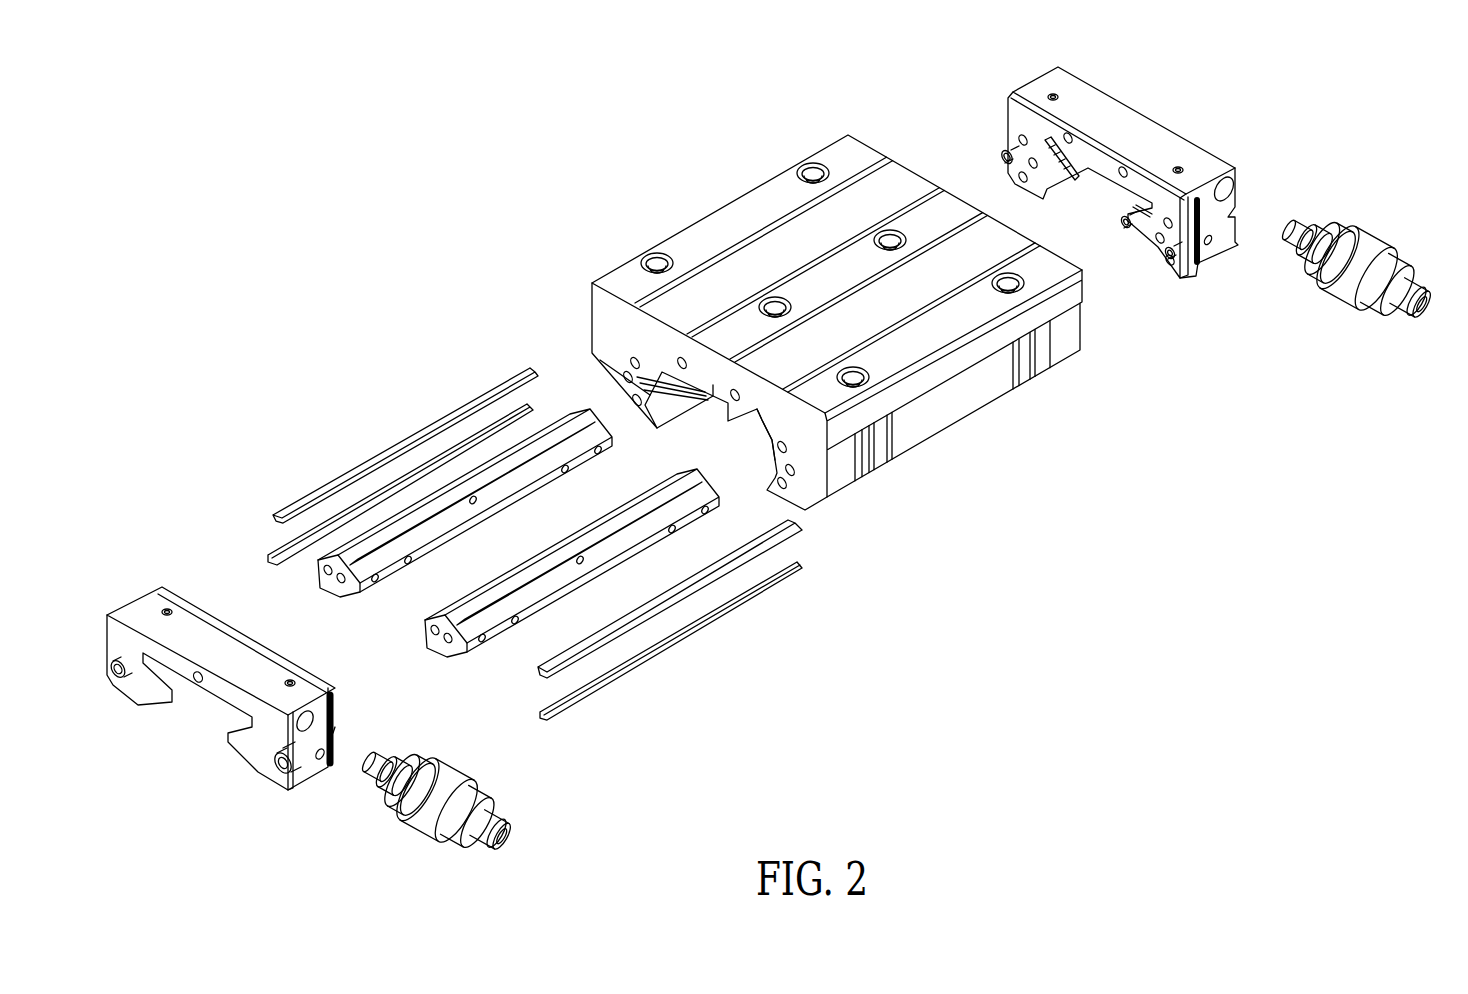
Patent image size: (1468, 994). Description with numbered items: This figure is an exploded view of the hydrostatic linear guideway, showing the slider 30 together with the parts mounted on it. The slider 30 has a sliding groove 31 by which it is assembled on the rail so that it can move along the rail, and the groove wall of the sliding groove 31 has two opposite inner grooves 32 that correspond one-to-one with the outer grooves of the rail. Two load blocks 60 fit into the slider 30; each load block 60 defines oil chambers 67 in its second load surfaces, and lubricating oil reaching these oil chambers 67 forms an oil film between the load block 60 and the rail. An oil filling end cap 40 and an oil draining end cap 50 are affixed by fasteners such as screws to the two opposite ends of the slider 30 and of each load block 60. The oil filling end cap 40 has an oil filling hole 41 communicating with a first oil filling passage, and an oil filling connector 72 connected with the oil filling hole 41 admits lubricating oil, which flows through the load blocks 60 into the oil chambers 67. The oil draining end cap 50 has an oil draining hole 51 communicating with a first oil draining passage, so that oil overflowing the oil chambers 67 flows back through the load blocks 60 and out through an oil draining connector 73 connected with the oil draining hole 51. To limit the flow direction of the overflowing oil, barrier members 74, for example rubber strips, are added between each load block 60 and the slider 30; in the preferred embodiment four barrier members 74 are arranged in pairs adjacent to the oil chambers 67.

The slider 30 is at (993, 420).
The sliding groove 31 is at (736, 440).
The inner grooves 32 is at (625, 380).
The oil filling end cap 40 is at (250, 773).
The oil filling hole 41 is at (307, 728).
The oil draining end cap 50 is at (1198, 113).
The oil draining hole 51 is at (1234, 184).
The load block 60 is at (318, 588).
The oil chamber 67 is at (580, 432).
The oil filling connector 72 is at (407, 828).
The oil draining connector 73 is at (1352, 208).
The barrier member 74 is at (262, 540).